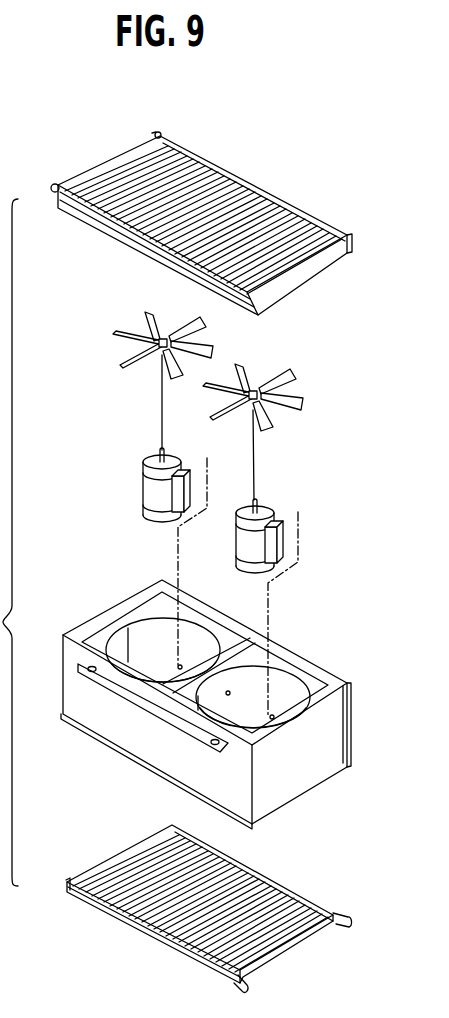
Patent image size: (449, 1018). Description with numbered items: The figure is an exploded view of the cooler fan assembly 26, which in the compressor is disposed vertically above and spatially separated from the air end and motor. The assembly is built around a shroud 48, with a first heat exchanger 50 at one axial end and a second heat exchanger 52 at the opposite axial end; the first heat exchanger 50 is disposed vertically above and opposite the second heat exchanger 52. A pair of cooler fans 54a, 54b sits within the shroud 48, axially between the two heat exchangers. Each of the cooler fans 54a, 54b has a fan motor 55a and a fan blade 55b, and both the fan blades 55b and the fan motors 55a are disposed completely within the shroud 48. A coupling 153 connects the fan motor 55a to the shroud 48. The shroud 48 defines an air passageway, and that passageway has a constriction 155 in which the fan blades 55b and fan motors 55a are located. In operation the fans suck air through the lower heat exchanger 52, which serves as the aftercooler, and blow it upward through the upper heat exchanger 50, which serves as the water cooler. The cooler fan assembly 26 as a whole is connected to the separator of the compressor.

The cooler fan assembly 26 is at (392, 684).
The shroud 48 is at (357, 731).
The first heat exchanger 50 is at (253, 181).
The second heat exchanger 52 is at (297, 882).
The cooler fan 54a is at (281, 509).
The cooler fan 54b is at (140, 503).
The fan motor 55a is at (153, 455).
The fan blade 55b is at (207, 343).
The coupling 153 is at (138, 651).
The constriction 155 is at (200, 624).